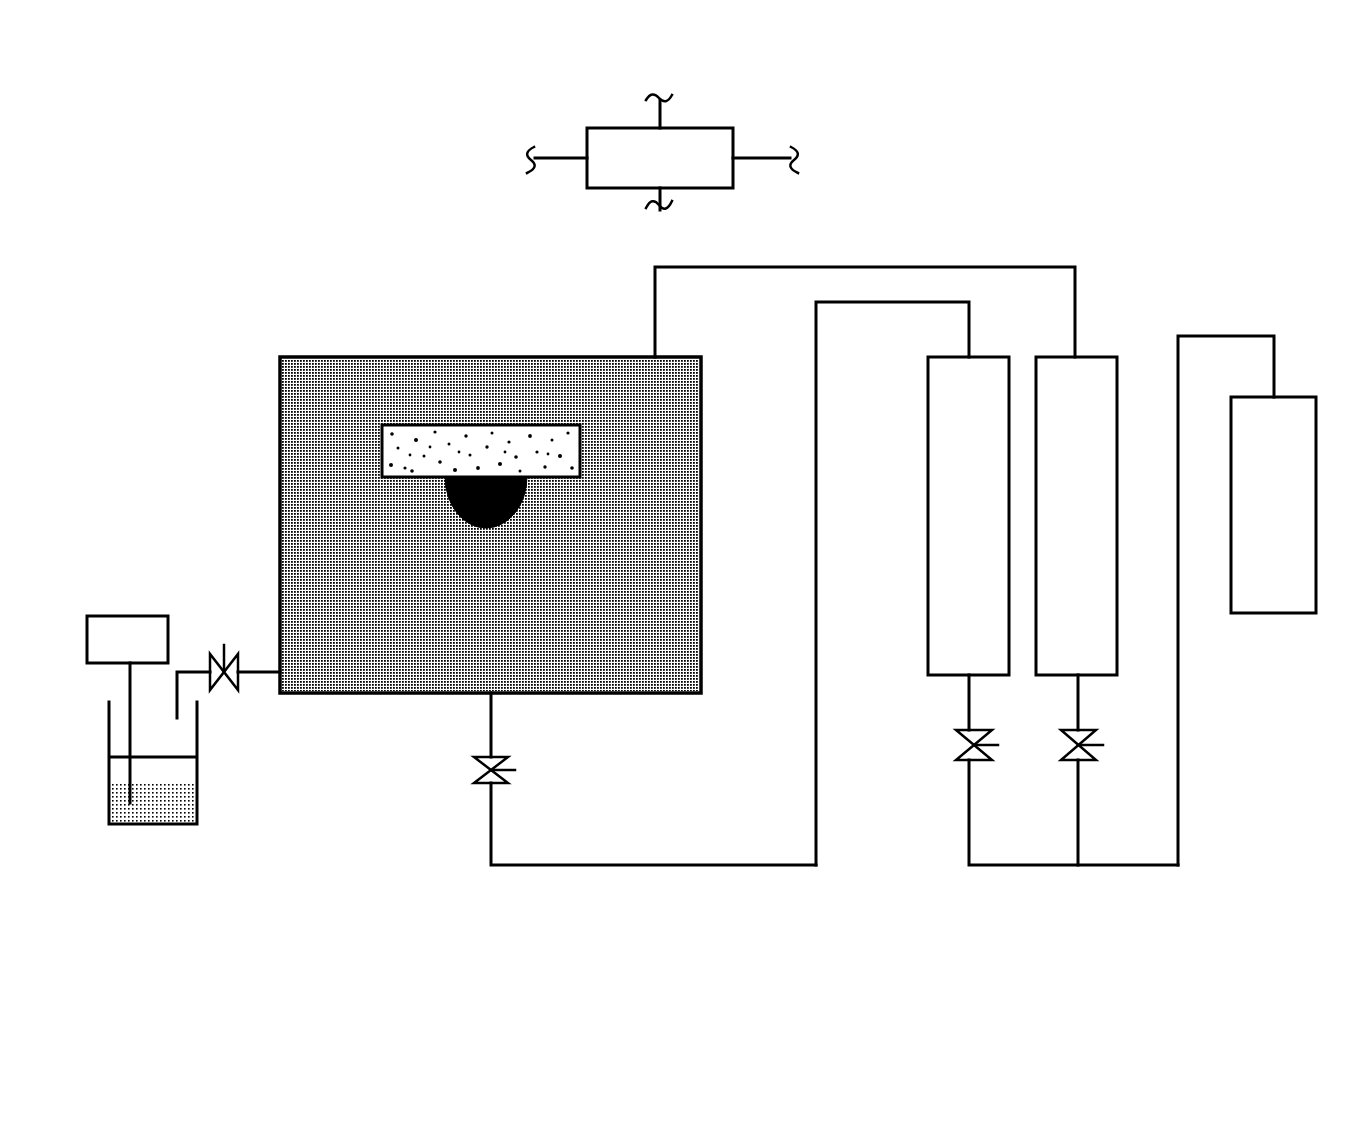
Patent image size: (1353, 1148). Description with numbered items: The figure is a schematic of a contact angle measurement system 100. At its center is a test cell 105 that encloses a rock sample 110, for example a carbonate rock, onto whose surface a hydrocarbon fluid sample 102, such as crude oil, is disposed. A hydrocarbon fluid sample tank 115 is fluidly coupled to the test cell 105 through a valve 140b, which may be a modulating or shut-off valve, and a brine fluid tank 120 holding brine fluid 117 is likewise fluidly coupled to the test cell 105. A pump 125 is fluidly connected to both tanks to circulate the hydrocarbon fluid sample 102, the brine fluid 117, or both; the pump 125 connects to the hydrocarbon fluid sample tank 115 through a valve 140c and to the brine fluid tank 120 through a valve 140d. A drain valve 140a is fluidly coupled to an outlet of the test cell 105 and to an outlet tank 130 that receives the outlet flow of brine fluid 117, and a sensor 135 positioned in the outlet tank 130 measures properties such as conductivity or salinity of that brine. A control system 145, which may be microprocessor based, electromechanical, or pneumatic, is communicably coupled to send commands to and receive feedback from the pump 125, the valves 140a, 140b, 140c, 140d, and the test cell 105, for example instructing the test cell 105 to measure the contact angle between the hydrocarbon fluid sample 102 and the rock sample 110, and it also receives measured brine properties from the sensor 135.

The contact angle measurement system 100 is at (1113, 153).
The hydrocarbon fluid sample 102 is at (529, 502).
The test cell 105 is at (305, 356).
The rock sample 110 is at (467, 440).
The hydrocarbon fluid sample tank 115 is at (968, 516).
The brine fluid 117 is at (647, 645).
The brine fluid tank 120 is at (1076, 516).
The pump 125 is at (1273, 505).
The outlet tank 130 is at (198, 768).
The sensor 135 is at (127, 709).
The drain valve 140a is at (232, 690).
The valve 140b is at (478, 786).
The valve 140c is at (967, 762).
The valve 140d is at (1069, 762).
The control system 145 is at (679, 149).